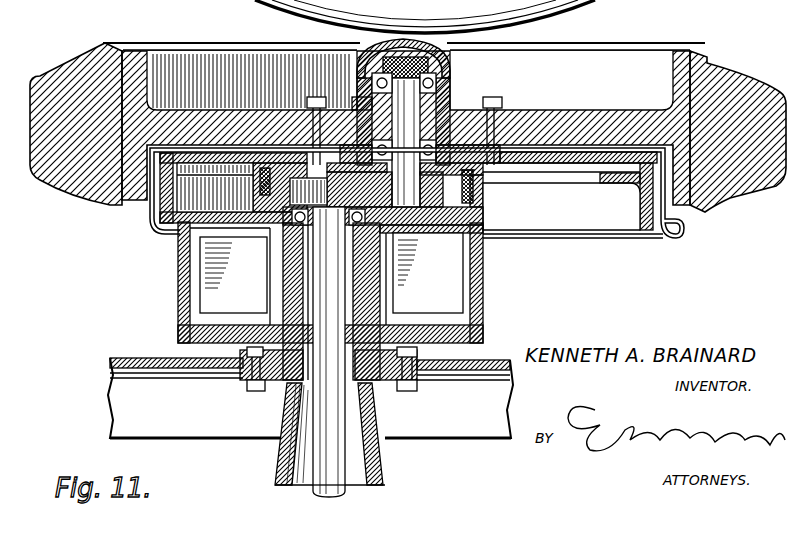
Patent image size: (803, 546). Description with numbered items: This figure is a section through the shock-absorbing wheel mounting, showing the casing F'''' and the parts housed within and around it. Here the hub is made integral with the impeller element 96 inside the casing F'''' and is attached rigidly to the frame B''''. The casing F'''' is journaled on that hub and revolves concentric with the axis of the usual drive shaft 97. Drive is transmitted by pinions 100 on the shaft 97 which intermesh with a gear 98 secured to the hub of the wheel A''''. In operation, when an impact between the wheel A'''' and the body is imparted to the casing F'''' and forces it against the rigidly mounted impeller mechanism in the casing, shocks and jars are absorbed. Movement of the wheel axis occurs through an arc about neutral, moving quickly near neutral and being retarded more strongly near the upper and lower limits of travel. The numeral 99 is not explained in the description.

The impeller element 96 is at (360, 300).
The drive shaft 97 is at (345, 465).
The intermeshing gear 98 is at (470, 160).
The screw 99 is at (450, 203).
The pinions 100 is at (302, 147).
The wheel A'''' is at (738, 158).
The casing F'''' is at (134, 282).
The frame B'''' is at (277, 398).